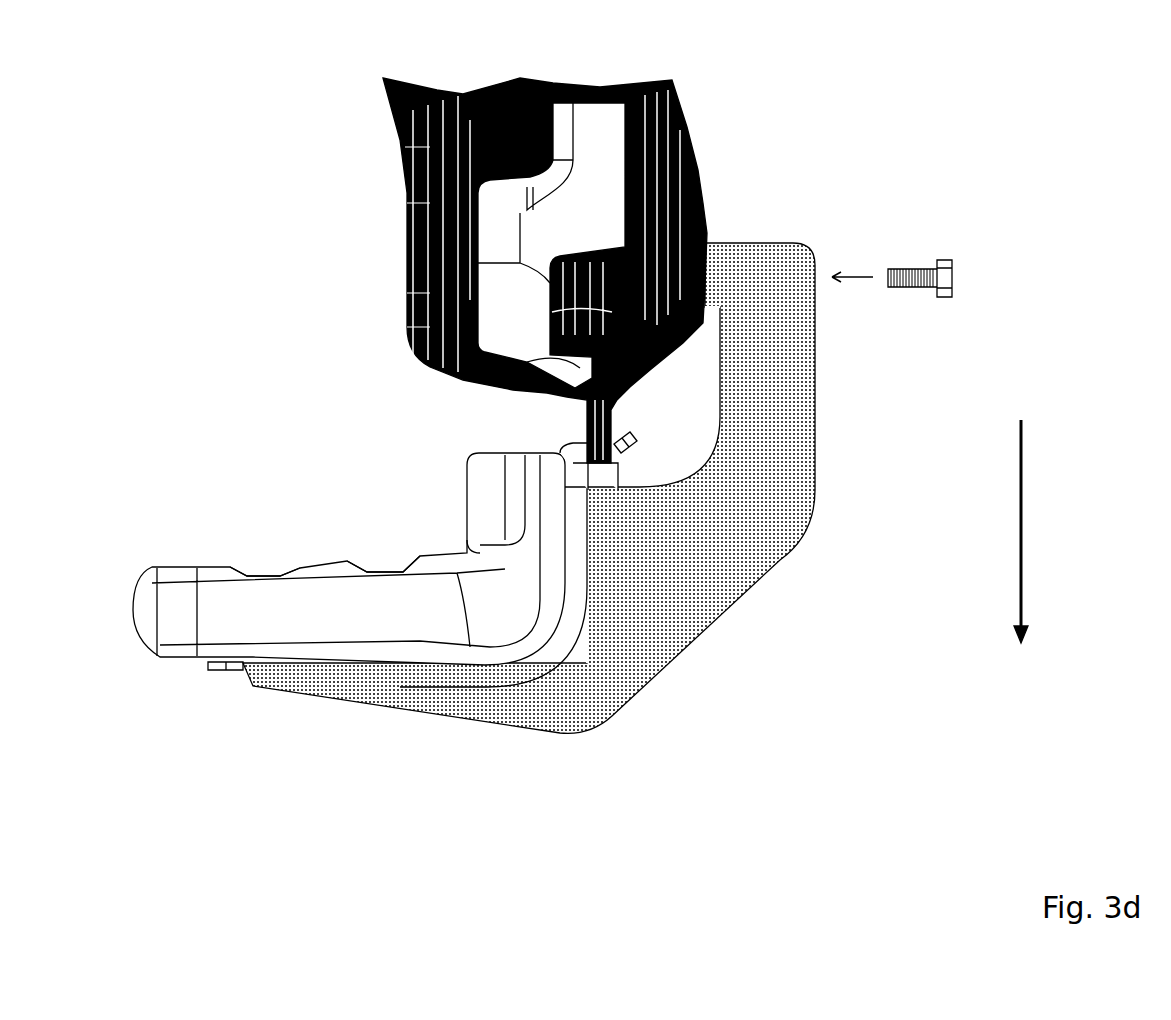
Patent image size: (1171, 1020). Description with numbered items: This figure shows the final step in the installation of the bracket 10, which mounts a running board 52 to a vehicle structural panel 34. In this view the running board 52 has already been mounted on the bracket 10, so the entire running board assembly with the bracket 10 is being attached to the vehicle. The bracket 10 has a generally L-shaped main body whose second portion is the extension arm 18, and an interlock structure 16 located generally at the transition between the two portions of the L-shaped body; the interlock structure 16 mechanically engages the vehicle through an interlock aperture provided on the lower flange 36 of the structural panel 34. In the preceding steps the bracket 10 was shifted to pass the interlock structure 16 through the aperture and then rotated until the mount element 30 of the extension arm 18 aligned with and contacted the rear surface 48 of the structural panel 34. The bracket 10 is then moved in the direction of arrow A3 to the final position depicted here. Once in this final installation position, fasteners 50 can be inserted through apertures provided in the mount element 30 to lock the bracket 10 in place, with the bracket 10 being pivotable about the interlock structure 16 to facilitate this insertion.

The bracket 10 is at (593, 378).
The interlock structure 16 is at (580, 443).
The extension arm 18 is at (783, 365).
The mount element 30 is at (700, 287).
The structural panel 34 is at (671, 268).
The lower flange 36 is at (613, 423).
The rear surface 48 is at (708, 222).
The fasteners 50 is at (947, 268).
The running board 52 is at (175, 633).
The arrow A3 is at (1023, 532).